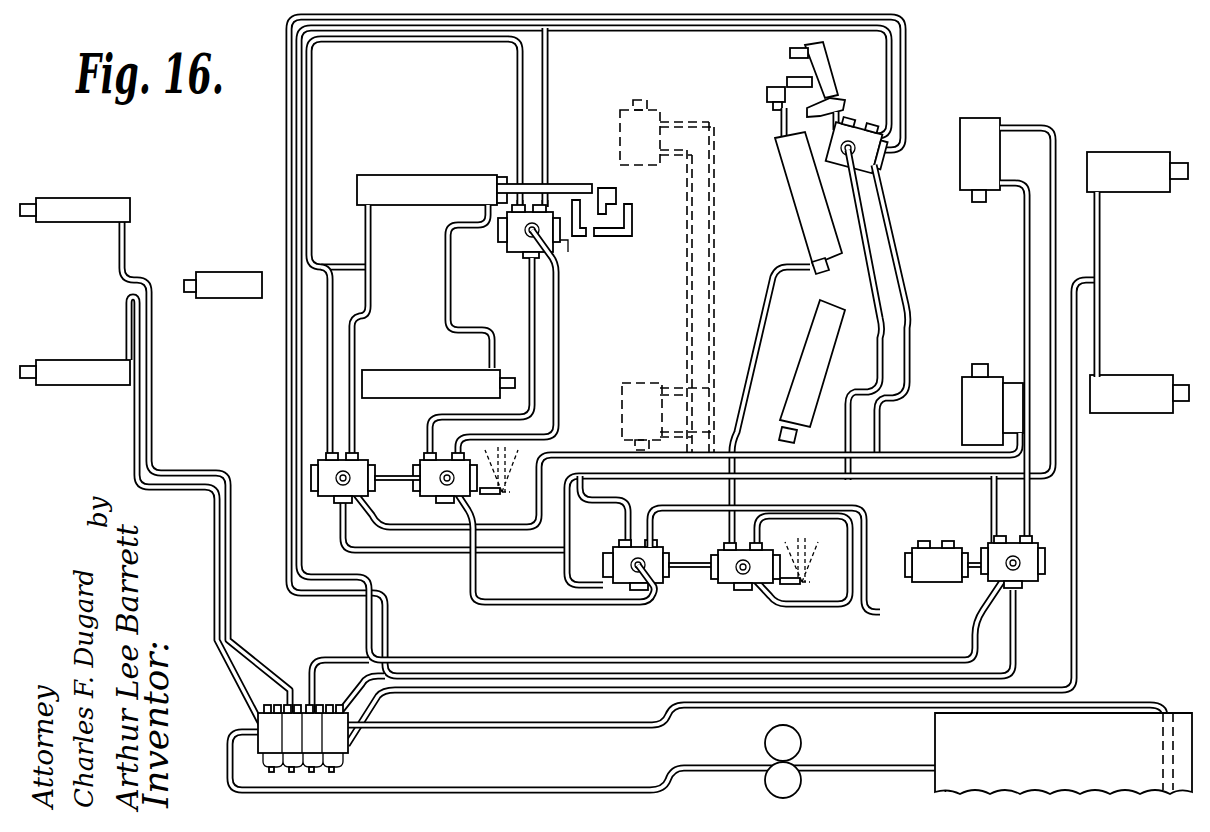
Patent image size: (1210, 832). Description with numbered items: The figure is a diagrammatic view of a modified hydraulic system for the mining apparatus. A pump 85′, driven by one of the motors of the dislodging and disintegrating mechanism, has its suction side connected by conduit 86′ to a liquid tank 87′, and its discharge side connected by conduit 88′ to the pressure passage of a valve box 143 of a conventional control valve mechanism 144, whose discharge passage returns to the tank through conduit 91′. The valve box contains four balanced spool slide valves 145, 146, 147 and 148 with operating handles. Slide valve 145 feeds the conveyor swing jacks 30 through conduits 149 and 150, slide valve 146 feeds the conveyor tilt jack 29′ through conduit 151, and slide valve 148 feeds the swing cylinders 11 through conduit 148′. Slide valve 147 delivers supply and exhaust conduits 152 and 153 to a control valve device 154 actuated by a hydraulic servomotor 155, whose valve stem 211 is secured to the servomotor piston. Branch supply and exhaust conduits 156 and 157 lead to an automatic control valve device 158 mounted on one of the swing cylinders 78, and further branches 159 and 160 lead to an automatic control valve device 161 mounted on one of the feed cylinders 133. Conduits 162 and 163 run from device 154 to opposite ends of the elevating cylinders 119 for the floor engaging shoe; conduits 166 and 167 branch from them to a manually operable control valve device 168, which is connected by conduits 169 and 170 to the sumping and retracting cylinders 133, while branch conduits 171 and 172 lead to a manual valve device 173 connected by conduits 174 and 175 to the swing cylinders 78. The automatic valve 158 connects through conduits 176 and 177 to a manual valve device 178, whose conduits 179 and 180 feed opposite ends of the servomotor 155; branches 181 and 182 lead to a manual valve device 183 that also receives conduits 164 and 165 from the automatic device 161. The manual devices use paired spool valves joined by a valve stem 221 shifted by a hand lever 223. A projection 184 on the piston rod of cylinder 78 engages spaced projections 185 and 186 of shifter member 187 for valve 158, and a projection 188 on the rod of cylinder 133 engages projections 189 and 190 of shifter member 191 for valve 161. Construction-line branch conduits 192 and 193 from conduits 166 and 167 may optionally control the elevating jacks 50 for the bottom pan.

The swing cylinders 11 is at (1150, 172).
The conveyor tilt jack 29′ is at (240, 282).
The swing jacks 30 is at (86, 212).
The elevating jacks 50 is at (630, 134).
The swing cylinders 78 is at (808, 218).
The pump 85′ is at (802, 744).
The conduit 86′ is at (860, 766).
The liquid tank 87′ is at (1100, 722).
The conduit 88′ is at (590, 788).
The conduit 91′ is at (505, 725).
The elevating cylinders 119 is at (990, 160).
The feed cylinders 133 is at (412, 196).
The valve box 143 is at (348, 738).
The control valve mechanism 144 is at (268, 740).
The slide valve 145 is at (270, 768).
The slide valve 146 is at (232, 788).
The slide valve 147 is at (316, 768).
The slide valve 148 is at (338, 762).
The conduit 148′ is at (1078, 512).
The conduit 149 is at (217, 533).
The conduit 150 is at (230, 560).
The conduit 151 is at (218, 462).
The supply conduit 152 is at (354, 672).
The exhaust conduit 153 is at (320, 658).
The control valve device 154 is at (1032, 580).
The hydraulic servomotor 155 is at (936, 582).
The branch supply conduit 156 is at (889, 72).
The branch exhaust conduit 157 is at (906, 70).
The automatic control valve device 158 is at (876, 140).
The branch supply conduit 159 is at (548, 98).
The branch exhaust conduit 160 is at (516, 101).
The automatic control valve device 161 is at (520, 240).
The conduit 162 is at (993, 512).
The conduit 163 is at (1028, 520).
The conduit 164 is at (528, 325).
The conduit 165 is at (560, 322).
The conduit 166 is at (372, 518).
The conduit 167 is at (344, 526).
The control valve device 168 is at (358, 462).
The conduit 169 is at (328, 413).
The conduit 170 is at (358, 416).
The branch conduit 171 is at (570, 584).
The branch conduit 172 is at (520, 603).
The control valve device 173 is at (654, 588).
The conduit 174 is at (628, 536).
The conduit 175 is at (686, 510).
The conduit 176 is at (850, 280).
The conduit 177 is at (900, 285).
The control valve device 178 is at (724, 582).
The conduit 179 is at (834, 603).
The conduit 180 is at (855, 616).
The branch conduit 181 is at (618, 642).
The branch conduit 182 is at (450, 630).
The control valve device 183 is at (436, 494).
The projection 184 is at (792, 80).
The projection 185 is at (790, 53).
The projection 186 is at (834, 103).
The shifter member 187 is at (828, 70).
The projection 188 is at (620, 205).
The projection 189 is at (636, 224).
The projection 190 is at (572, 186).
The shifter member 191 is at (582, 251).
The branch conduit 192 is at (717, 305).
The branch conduit 193 is at (684, 325).
The valve stem 211 is at (972, 563).
The valve stem 221 is at (394, 476).
The hand lever 223 is at (506, 462).